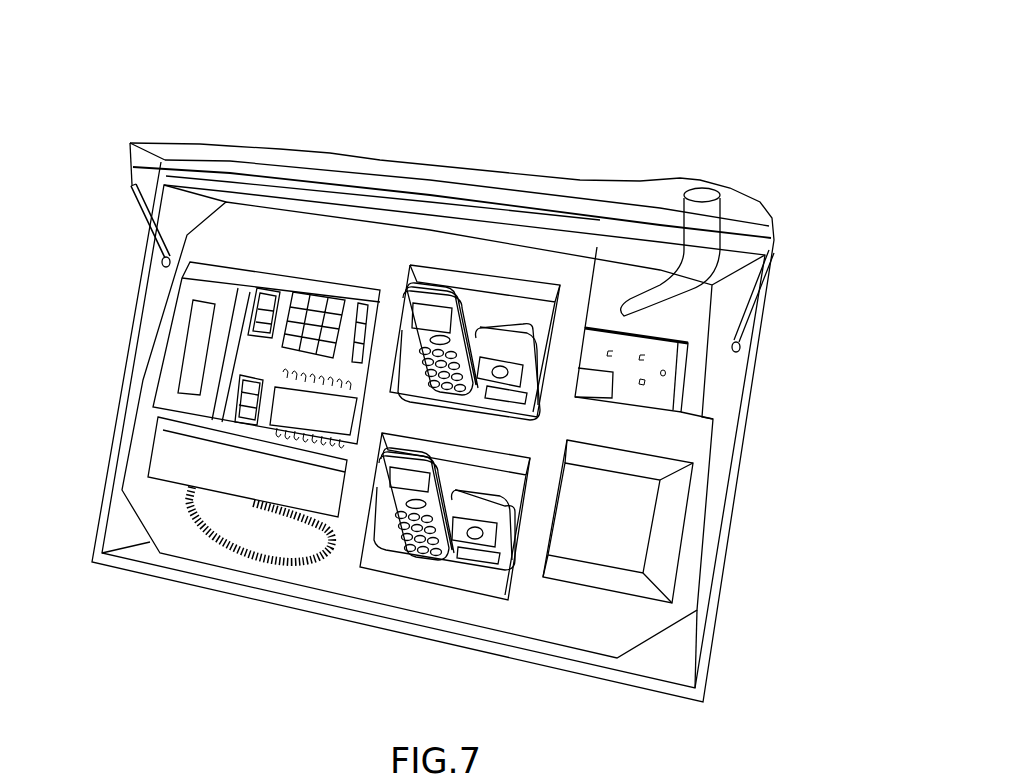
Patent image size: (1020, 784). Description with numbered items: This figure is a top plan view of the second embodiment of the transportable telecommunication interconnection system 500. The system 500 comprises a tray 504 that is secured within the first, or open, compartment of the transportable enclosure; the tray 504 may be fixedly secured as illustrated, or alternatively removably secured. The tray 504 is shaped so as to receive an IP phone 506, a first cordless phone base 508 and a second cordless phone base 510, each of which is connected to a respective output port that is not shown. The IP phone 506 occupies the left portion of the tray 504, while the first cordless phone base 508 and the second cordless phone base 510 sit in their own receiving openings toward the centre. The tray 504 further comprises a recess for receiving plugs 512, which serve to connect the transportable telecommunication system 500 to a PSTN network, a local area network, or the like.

The transportable telecommunication interconnection system 500 is at (432, 62).
The tray 504 is at (327, 232).
The IP phone 506 is at (233, 473).
The first cordless phone base 508 is at (432, 543).
The second cordless phone base 510 is at (497, 352).
The plugs 512 is at (652, 350).